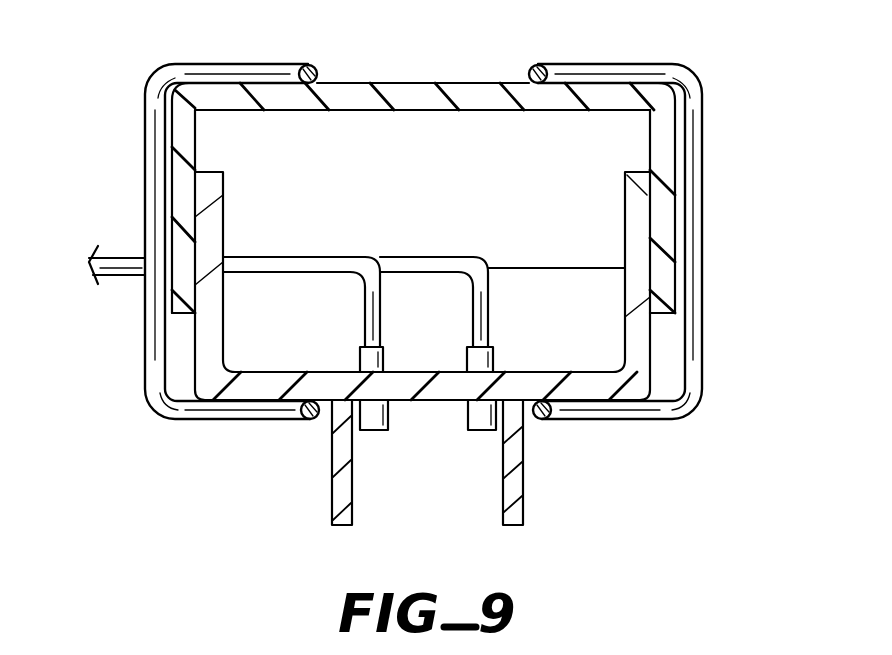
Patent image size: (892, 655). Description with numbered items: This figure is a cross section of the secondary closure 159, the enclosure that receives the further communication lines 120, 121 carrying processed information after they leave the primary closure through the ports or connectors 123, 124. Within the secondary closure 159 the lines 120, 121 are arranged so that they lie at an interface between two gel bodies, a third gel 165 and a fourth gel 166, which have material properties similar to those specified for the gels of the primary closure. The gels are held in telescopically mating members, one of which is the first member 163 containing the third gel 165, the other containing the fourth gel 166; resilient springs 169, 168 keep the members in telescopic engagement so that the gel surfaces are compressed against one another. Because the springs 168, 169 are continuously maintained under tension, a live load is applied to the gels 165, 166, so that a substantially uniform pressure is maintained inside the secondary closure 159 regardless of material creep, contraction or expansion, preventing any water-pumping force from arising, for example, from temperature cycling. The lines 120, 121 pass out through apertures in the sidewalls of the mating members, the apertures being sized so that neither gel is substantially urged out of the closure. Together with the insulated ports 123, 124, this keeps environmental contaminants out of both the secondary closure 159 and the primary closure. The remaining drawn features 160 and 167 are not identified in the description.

The secondary closure 159 is at (424, 269).
The fourth gel 166 is at (356, 142).
The separator membrane 167 is at (518, 266).
The first telescopically mating member 163 is at (637, 211).
The lower filler material / inner cup 160 is at (598, 307).
The further communication line 120 is at (372, 316).
The further communication line 121 is at (486, 323).
The resilient spring 169 is at (205, 413).
The resilient spring 168 is at (647, 413).
The port or connector 123 is at (360, 360).
The port or connector 124 is at (500, 373).
The third gel 165 is at (430, 327).